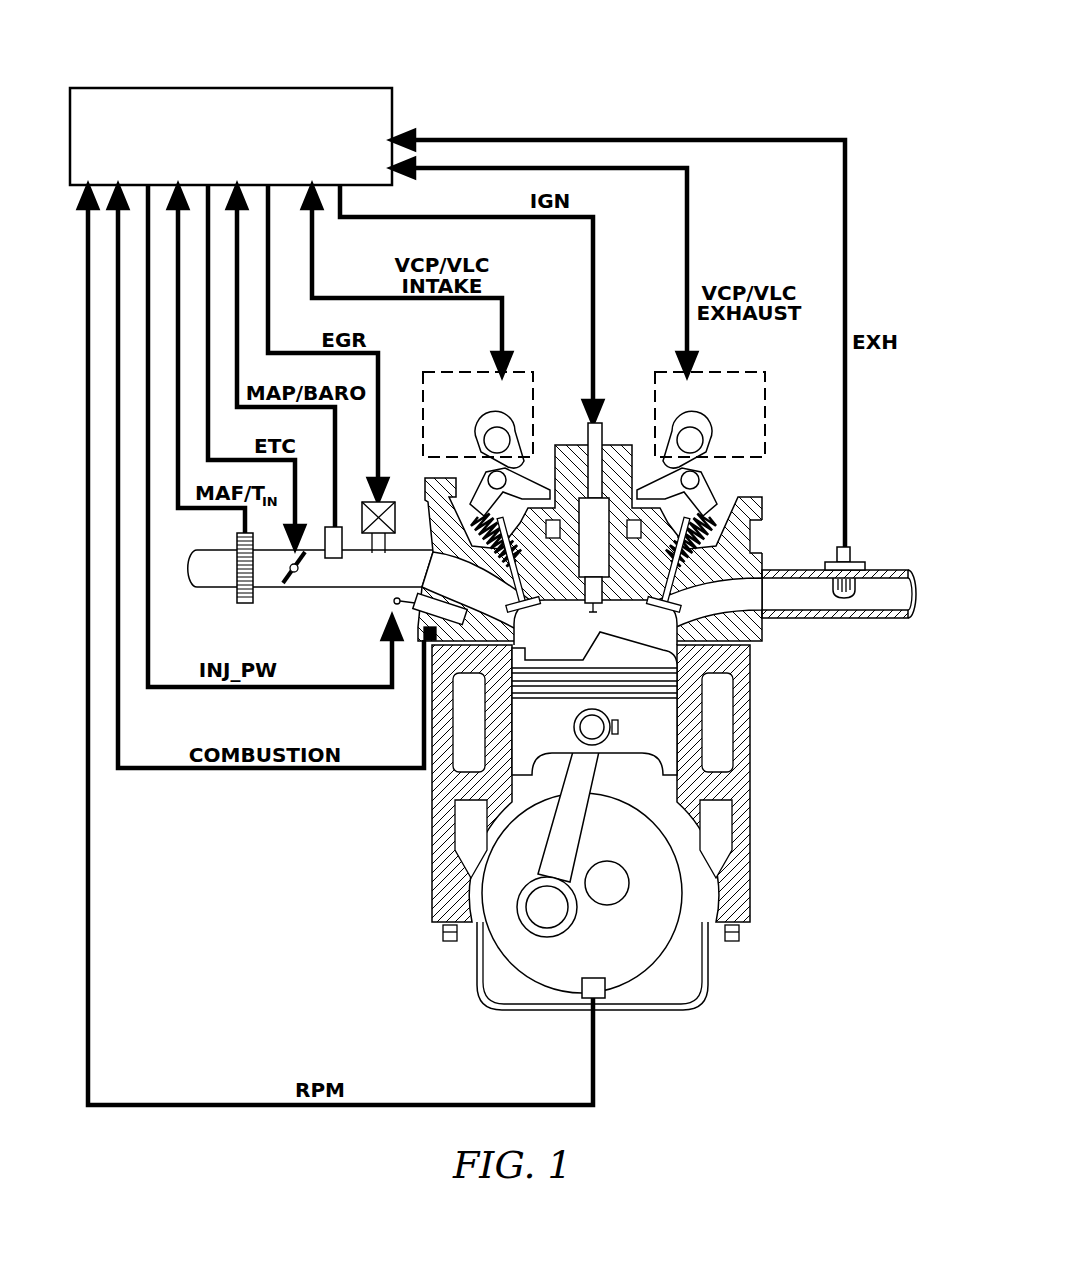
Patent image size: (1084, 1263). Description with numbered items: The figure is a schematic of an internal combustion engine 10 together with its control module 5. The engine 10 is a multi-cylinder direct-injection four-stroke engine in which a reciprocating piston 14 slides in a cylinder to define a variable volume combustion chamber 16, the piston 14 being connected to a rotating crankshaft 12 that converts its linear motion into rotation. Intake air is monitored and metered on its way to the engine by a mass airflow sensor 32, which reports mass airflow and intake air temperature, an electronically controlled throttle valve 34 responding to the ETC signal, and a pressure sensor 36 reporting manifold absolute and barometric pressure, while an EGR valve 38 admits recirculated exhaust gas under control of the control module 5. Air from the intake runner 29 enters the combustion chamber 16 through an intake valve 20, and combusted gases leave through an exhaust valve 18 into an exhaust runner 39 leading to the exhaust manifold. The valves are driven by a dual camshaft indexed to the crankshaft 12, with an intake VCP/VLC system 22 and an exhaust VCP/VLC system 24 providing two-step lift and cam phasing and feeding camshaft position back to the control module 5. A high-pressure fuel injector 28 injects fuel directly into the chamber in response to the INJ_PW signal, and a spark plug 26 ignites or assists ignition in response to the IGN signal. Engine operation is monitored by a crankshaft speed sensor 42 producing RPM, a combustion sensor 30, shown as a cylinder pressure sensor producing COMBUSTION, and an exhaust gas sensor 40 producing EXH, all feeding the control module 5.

The control module 5 is at (347, 88).
The internal combustion engine 10 is at (748, 788).
The crankshaft 12 is at (651, 940).
The piston 14 is at (653, 741).
The combustion chamber 16 is at (568, 650).
The exhaust valve 18 is at (688, 600).
The intake valve 20 is at (506, 590).
The intake VCP/VLC system 22 is at (526, 372).
The exhaust VCP/VLC system 24 is at (753, 437).
The spark plug 26 is at (605, 427).
The fuel injector 28 is at (389, 605).
The intake runner 29 is at (407, 552).
The combustion sensor 30 is at (424, 640).
The mass airflow sensor 32 is at (243, 603).
The throttle valve 34 is at (290, 578).
The pressure sensor 36 is at (333, 559).
The EGR valve 38 is at (372, 553).
The exhaust runner 39 is at (742, 587).
The exhaust gas sensor 40 is at (848, 558).
The crankshaft rotational speed sensor 42 is at (585, 997).